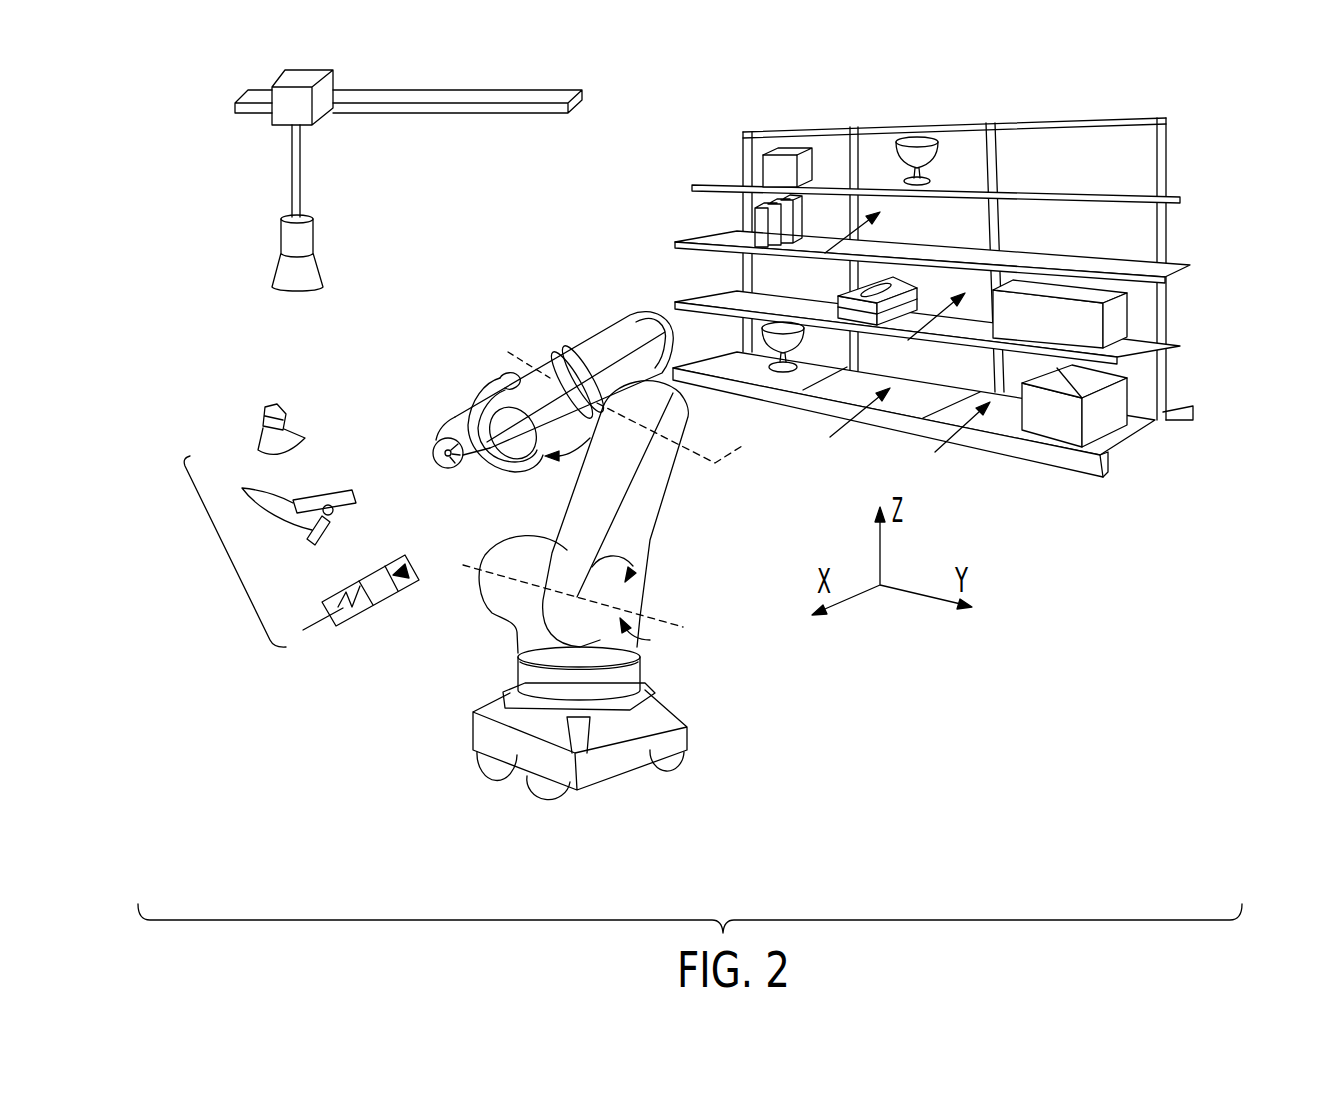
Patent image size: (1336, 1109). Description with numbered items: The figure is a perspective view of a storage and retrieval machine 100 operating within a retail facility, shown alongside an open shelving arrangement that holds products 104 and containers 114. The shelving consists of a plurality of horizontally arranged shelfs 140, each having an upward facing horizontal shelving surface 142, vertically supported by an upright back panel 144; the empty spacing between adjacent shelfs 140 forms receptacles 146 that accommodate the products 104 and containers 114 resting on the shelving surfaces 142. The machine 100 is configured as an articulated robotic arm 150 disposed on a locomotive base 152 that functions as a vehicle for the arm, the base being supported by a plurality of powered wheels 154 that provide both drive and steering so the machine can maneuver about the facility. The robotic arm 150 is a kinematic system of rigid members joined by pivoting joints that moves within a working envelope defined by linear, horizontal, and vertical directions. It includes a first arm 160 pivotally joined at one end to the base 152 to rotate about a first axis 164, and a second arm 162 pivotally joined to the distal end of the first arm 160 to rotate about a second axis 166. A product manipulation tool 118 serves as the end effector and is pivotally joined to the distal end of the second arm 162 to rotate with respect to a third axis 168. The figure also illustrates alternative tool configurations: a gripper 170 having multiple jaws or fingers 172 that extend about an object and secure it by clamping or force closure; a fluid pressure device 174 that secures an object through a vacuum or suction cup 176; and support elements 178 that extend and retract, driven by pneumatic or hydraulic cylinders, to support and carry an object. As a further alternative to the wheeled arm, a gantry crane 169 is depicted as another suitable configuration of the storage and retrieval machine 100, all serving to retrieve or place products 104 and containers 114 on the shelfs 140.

The storage and retrieval machine 100 is at (485, 351).
The products 104 is at (917, 140).
The containers 114 is at (792, 150).
The product manipulation tool 118 is at (229, 568).
The shelfs 140 is at (1166, 196).
The shelving surface 142 is at (1072, 192).
The upright back panel 144 is at (1167, 135).
The receptacles 146 is at (900, 350).
The articulated robotic arm 150 is at (643, 318).
The locomotive base 152 is at (512, 685).
The powered wheels 154 is at (500, 775).
The first arm 160 is at (645, 520).
The second arm 162 is at (590, 338).
The first axis 164 is at (666, 615).
The second axis 166 is at (686, 434).
The third axis 168 is at (545, 462).
The gantry crane 169 is at (260, 151).
The gripper 170 is at (347, 492).
The fingers 172 is at (258, 498).
The fluid pressure device 174 is at (272, 396).
The suction cup 176 is at (283, 420).
The support elements 178 is at (341, 645).